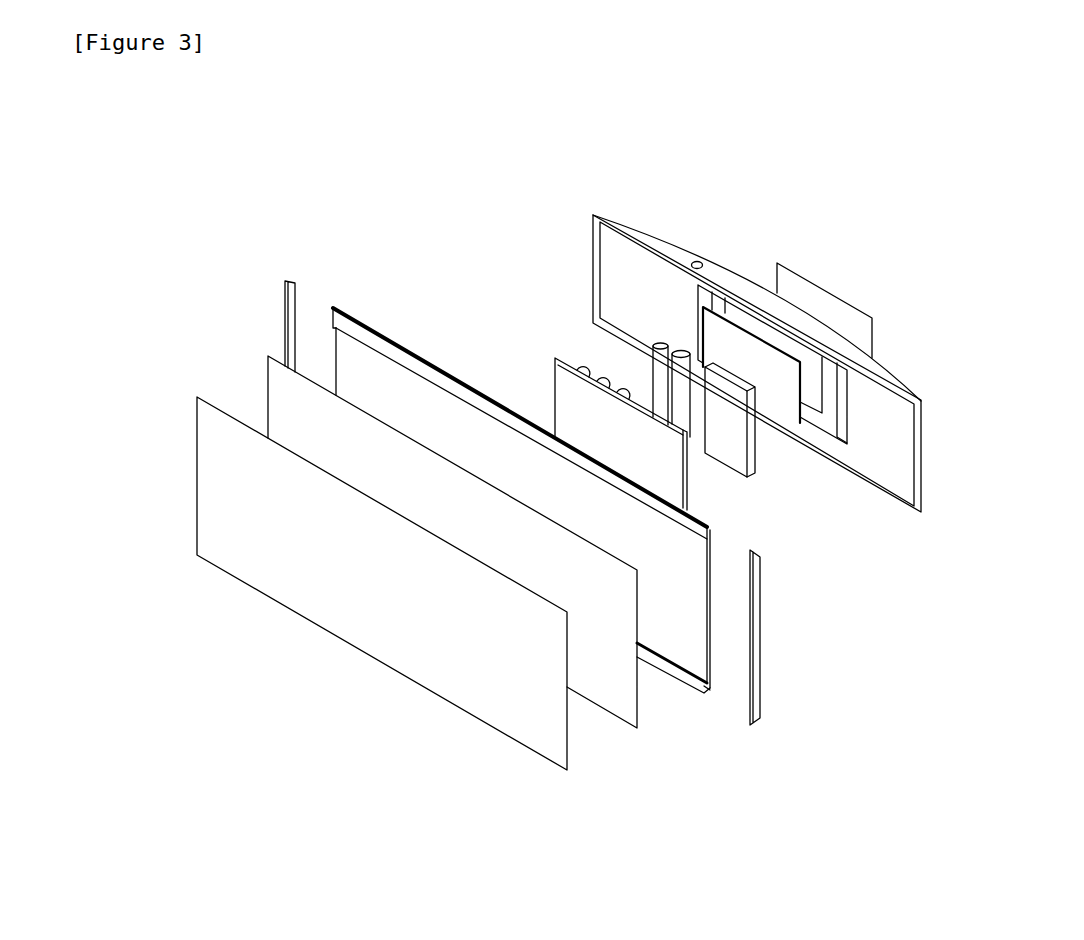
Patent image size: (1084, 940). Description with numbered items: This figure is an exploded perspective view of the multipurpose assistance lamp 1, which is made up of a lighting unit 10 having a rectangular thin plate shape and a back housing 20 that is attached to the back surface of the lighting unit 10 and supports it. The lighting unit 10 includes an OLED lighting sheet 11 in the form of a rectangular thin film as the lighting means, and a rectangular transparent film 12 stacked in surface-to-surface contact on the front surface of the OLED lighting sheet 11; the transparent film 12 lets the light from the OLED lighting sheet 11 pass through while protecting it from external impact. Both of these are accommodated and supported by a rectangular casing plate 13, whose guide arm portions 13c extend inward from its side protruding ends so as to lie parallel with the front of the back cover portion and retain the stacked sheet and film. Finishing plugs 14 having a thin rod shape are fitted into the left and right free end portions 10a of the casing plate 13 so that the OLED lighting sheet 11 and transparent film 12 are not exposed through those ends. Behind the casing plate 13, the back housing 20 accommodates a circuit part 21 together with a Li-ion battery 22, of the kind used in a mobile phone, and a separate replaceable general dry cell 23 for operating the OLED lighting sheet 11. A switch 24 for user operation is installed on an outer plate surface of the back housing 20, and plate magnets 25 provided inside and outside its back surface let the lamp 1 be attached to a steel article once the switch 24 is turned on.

The multipurpose assistance lamp 1 is at (200, 121).
The lighting unit 10 is at (176, 281).
The free end portions 10a is at (712, 667).
The OLED lighting sheet 11 is at (262, 375).
The transparent film 12 is at (196, 478).
The casing plate 13 is at (393, 336).
The guide arm portions 13c is at (344, 337).
The finishing plugs 14 is at (760, 608).
The back housing 20 is at (619, 208).
The circuit part 21 is at (552, 376).
The Li-ion battery 22 is at (752, 456).
The general dry cell 23 is at (660, 342).
The switch 24 is at (701, 261).
The plate magnets 25 is at (775, 352).